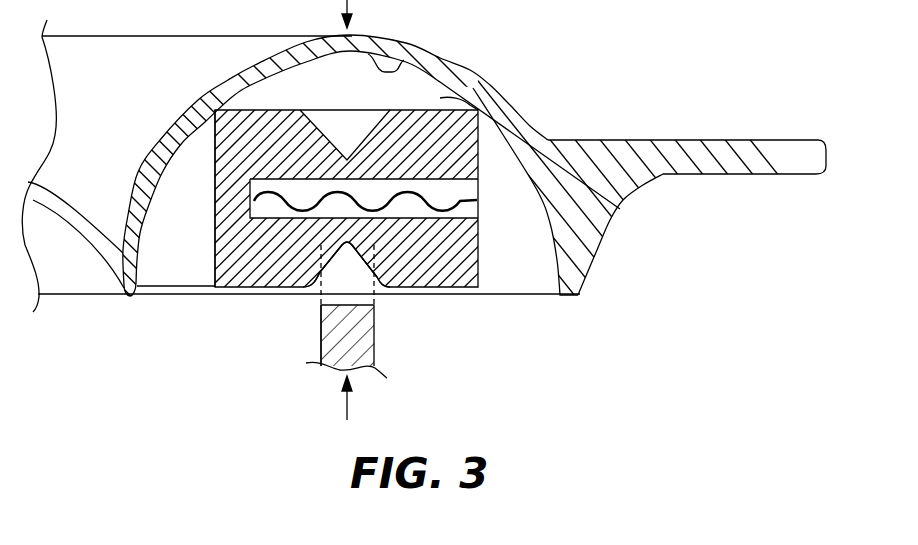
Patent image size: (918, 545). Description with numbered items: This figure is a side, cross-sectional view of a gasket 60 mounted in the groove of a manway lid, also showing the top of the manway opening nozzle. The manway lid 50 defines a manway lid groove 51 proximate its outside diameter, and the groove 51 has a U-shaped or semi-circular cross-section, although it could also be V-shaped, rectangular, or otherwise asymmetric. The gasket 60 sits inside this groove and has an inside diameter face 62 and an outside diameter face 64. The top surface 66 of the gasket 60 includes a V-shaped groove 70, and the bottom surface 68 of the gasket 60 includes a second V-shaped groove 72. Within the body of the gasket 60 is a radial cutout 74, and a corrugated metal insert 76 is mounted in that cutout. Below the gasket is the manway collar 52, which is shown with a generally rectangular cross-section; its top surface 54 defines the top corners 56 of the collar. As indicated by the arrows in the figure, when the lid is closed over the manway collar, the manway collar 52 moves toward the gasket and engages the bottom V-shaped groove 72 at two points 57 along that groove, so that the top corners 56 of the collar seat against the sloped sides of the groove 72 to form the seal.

The manway lid 50 is at (439, 167).
The manway lid groove 51 is at (399, 63).
The manway collar 52 is at (363, 311).
The top surface 54 is at (322, 322).
The top corners 56 is at (321, 306).
The points 57 is at (323, 268).
The gasket 60 is at (346, 216).
The inside diameter face 62 is at (215, 193).
The outside diameter face 64 is at (479, 245).
The top surface 66 is at (478, 110).
The bottom surface 68 is at (265, 288).
The V-shaped groove 70 is at (349, 159).
The V-shaped groove 72 is at (356, 253).
The radial cutout 74 is at (413, 199).
The corrugated metal insert 76 is at (453, 200).